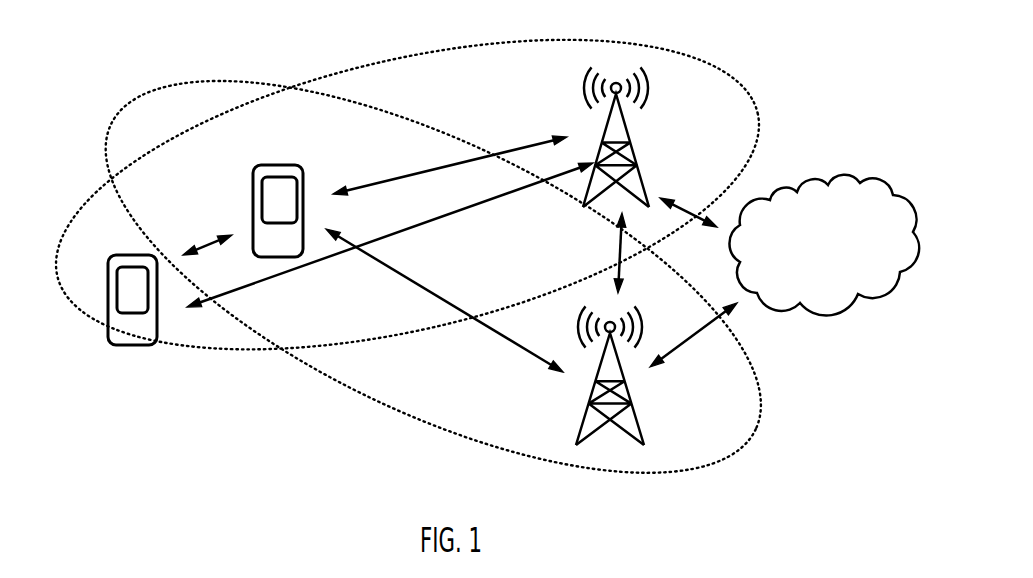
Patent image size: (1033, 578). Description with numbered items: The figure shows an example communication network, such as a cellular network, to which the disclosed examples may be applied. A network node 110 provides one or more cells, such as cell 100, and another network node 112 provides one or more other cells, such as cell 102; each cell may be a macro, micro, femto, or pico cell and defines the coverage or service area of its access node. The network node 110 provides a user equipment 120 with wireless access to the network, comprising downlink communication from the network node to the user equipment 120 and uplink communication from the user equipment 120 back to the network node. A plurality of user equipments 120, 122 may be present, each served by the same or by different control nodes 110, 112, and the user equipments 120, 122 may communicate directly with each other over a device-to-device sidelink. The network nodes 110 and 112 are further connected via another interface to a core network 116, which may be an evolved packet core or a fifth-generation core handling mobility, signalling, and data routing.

The cell 100 is at (410, 56).
The cell 102 is at (191, 82).
The network node 110 is at (641, 152).
The network node 112 is at (641, 417).
The core network 116 is at (824, 245).
The user equipment 120 is at (258, 166).
The user equipment 122 is at (112, 254).